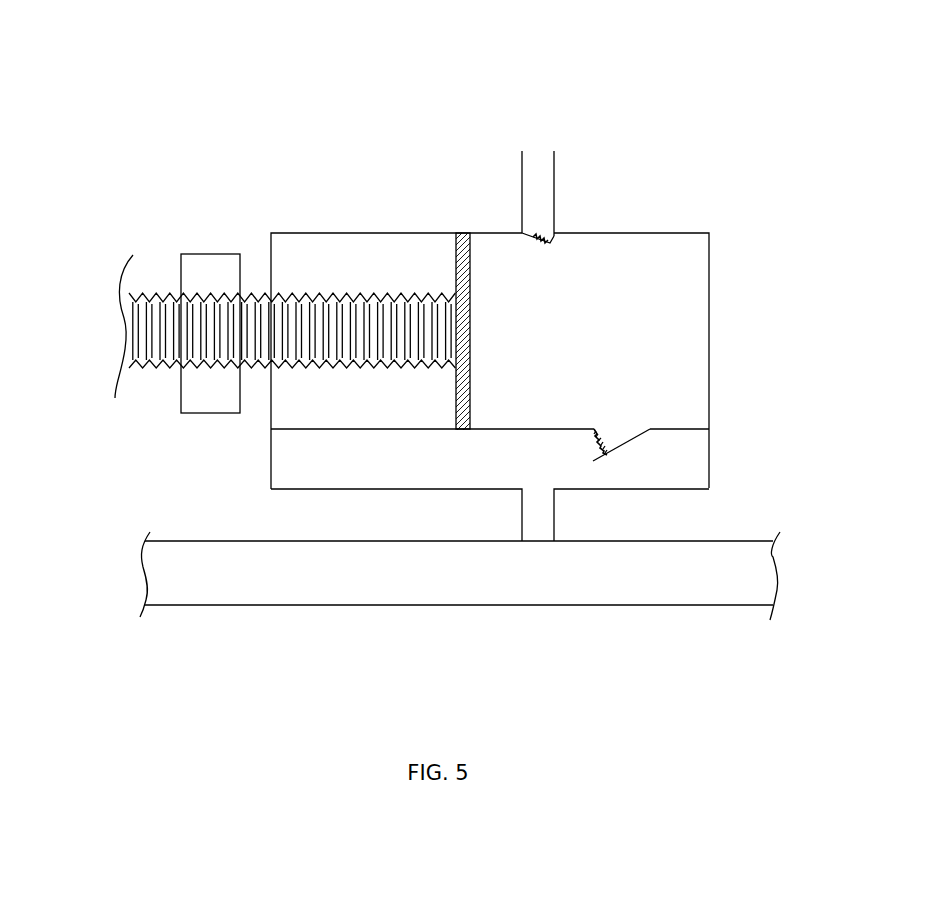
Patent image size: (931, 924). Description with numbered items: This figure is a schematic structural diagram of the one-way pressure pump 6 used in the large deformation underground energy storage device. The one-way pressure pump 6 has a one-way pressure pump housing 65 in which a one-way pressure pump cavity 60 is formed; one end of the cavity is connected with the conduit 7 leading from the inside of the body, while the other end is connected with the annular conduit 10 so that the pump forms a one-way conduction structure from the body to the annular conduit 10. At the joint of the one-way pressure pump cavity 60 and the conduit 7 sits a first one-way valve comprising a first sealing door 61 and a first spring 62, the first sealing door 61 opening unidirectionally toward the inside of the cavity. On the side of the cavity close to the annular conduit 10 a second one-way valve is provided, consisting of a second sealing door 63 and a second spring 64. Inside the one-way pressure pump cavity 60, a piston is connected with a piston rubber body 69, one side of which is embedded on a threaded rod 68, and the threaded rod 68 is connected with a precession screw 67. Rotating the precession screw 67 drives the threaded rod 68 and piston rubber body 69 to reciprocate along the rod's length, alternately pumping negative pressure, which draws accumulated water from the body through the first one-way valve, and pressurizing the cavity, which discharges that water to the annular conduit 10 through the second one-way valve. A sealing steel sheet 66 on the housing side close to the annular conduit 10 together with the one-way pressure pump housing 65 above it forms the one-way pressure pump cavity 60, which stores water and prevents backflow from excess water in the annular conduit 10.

The one-way pressure pump 6 is at (587, 54).
The conduit 7 is at (555, 192).
The annular conduit 10 is at (393, 583).
The one-way pressure pump cavity 60 is at (669, 307).
The first sealing door 61 is at (552, 242).
The first spring 62 is at (541, 236).
The second sealing door 63 is at (622, 448).
The second spring 64 is at (605, 433).
The one-way pressure pump housing 65 is at (312, 489).
The sealing steel sheet 66 is at (303, 429).
The precession screw 67 is at (180, 265).
The threaded rod 68 is at (333, 297).
The piston rubber body 69 is at (457, 270).